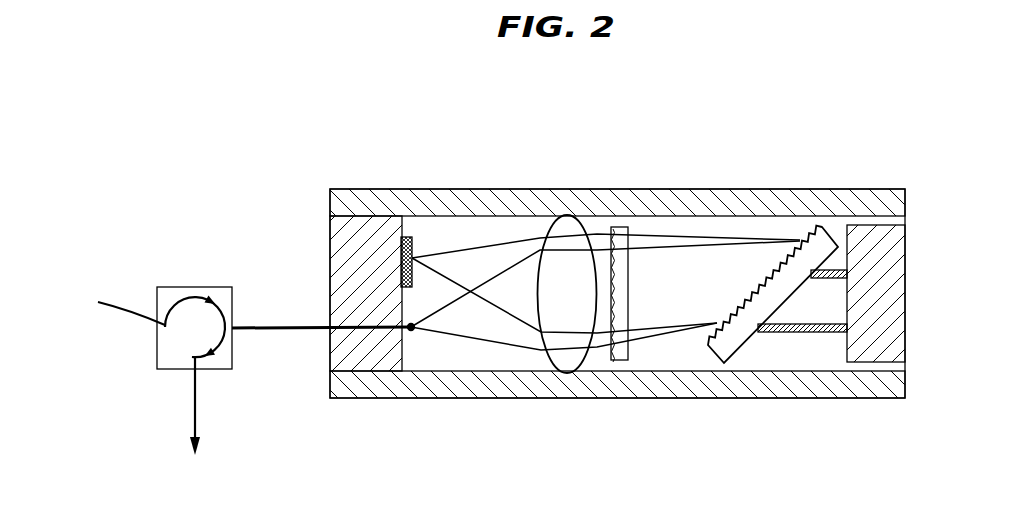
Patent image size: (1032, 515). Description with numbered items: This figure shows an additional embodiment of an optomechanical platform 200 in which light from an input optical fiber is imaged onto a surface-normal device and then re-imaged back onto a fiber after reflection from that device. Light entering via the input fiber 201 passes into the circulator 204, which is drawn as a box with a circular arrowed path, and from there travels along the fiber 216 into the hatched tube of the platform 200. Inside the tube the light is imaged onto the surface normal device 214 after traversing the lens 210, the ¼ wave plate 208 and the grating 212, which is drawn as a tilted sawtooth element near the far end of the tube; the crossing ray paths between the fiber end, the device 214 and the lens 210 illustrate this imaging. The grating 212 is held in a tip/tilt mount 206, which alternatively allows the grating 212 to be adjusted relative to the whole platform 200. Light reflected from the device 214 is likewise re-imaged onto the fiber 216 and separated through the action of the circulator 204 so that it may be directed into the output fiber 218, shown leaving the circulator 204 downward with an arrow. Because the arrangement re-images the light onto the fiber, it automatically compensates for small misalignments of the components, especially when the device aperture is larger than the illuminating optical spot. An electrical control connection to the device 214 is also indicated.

The platform 200 is at (568, 73).
The input fiber 201 is at (102, 349).
The circulator 204 is at (233, 369).
The tip/tilt mount 206 is at (798, 333).
The ¼ wave plate 208 is at (627, 362).
The lens 210 is at (549, 356).
The grating 212 is at (822, 230).
The surface normal device 214 is at (406, 237).
The fiber 216 is at (274, 326).
The output fiber 218 is at (189, 404).